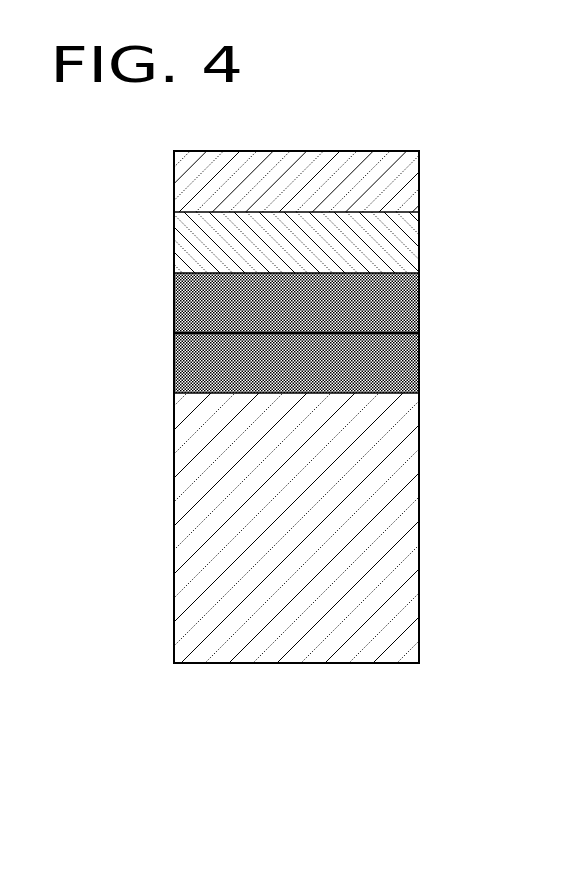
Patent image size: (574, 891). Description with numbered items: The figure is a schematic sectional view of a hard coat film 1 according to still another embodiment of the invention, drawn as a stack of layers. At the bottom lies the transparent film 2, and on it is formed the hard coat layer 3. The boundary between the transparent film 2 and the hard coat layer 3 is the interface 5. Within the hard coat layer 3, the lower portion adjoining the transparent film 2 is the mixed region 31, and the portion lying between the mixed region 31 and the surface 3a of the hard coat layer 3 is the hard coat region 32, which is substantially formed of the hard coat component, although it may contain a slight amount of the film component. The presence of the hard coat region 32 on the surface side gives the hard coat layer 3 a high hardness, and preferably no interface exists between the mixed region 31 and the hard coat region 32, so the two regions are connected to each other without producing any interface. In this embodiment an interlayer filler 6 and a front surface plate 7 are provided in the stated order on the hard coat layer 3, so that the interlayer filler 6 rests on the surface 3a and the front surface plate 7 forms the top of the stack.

The hard coat film 1 is at (287, 431).
The transparent film 2 is at (287, 393).
The hard coat layer 3 is at (343, 333).
The surface of the hard coat layer 3a is at (191, 273).
The interface 5 is at (174, 393).
The interlayer filler 6 is at (425, 212).
The front surface plate 7 is at (425, 151).
The mixed region 31 is at (325, 363).
The hard coat region 32 is at (425, 273).